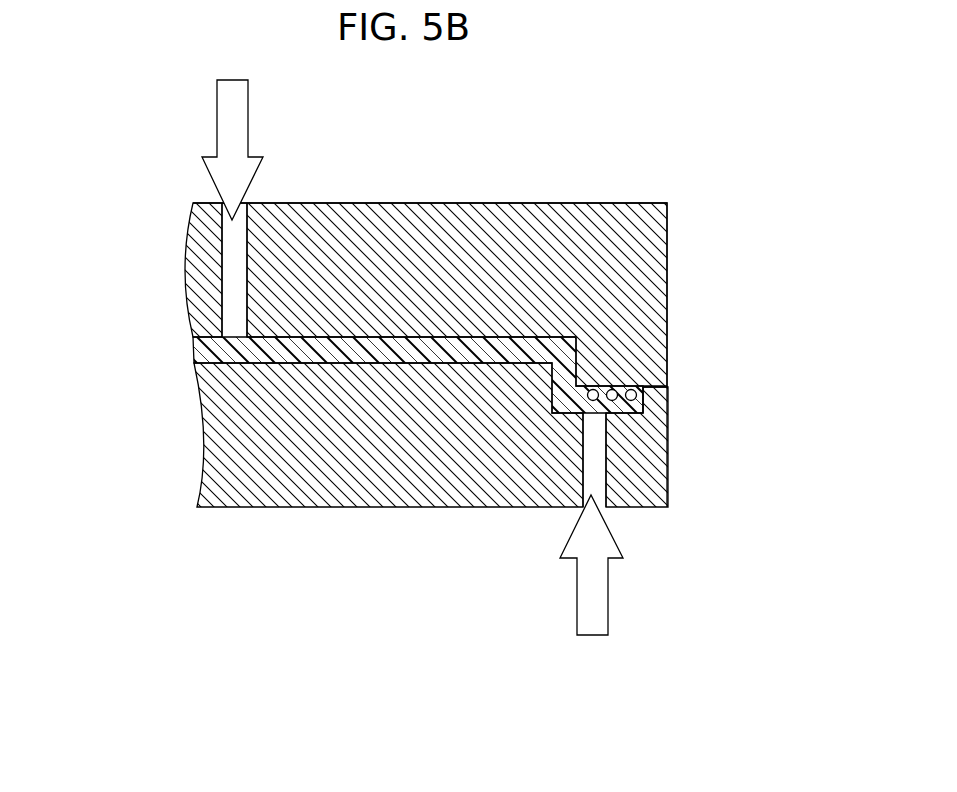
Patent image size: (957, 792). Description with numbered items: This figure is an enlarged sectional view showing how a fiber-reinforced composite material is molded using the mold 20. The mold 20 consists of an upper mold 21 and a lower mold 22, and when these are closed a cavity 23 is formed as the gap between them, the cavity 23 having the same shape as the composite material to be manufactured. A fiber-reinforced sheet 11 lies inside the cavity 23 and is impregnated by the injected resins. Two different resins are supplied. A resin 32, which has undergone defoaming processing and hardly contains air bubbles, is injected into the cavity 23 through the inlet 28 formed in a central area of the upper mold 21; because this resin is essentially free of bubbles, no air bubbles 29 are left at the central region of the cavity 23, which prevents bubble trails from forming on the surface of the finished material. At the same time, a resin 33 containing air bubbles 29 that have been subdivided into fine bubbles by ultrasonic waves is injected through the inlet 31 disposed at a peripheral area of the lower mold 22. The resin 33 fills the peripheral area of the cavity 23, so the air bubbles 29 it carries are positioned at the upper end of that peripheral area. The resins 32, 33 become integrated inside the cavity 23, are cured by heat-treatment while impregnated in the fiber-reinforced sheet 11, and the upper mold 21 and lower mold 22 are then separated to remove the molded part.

The mold 20 is at (714, 128).
The upper mold 21 is at (667, 283).
The lower mold 22 is at (667, 437).
The fiber-reinforced sheet 11 is at (505, 352).
The cavity 23 is at (668, 409).
The air bubbles 29 is at (668, 393).
The inlet 28 is at (223, 242).
The inlet 31 is at (614, 478).
The resin 32 is at (248, 102).
The resin 33 is at (577, 607).